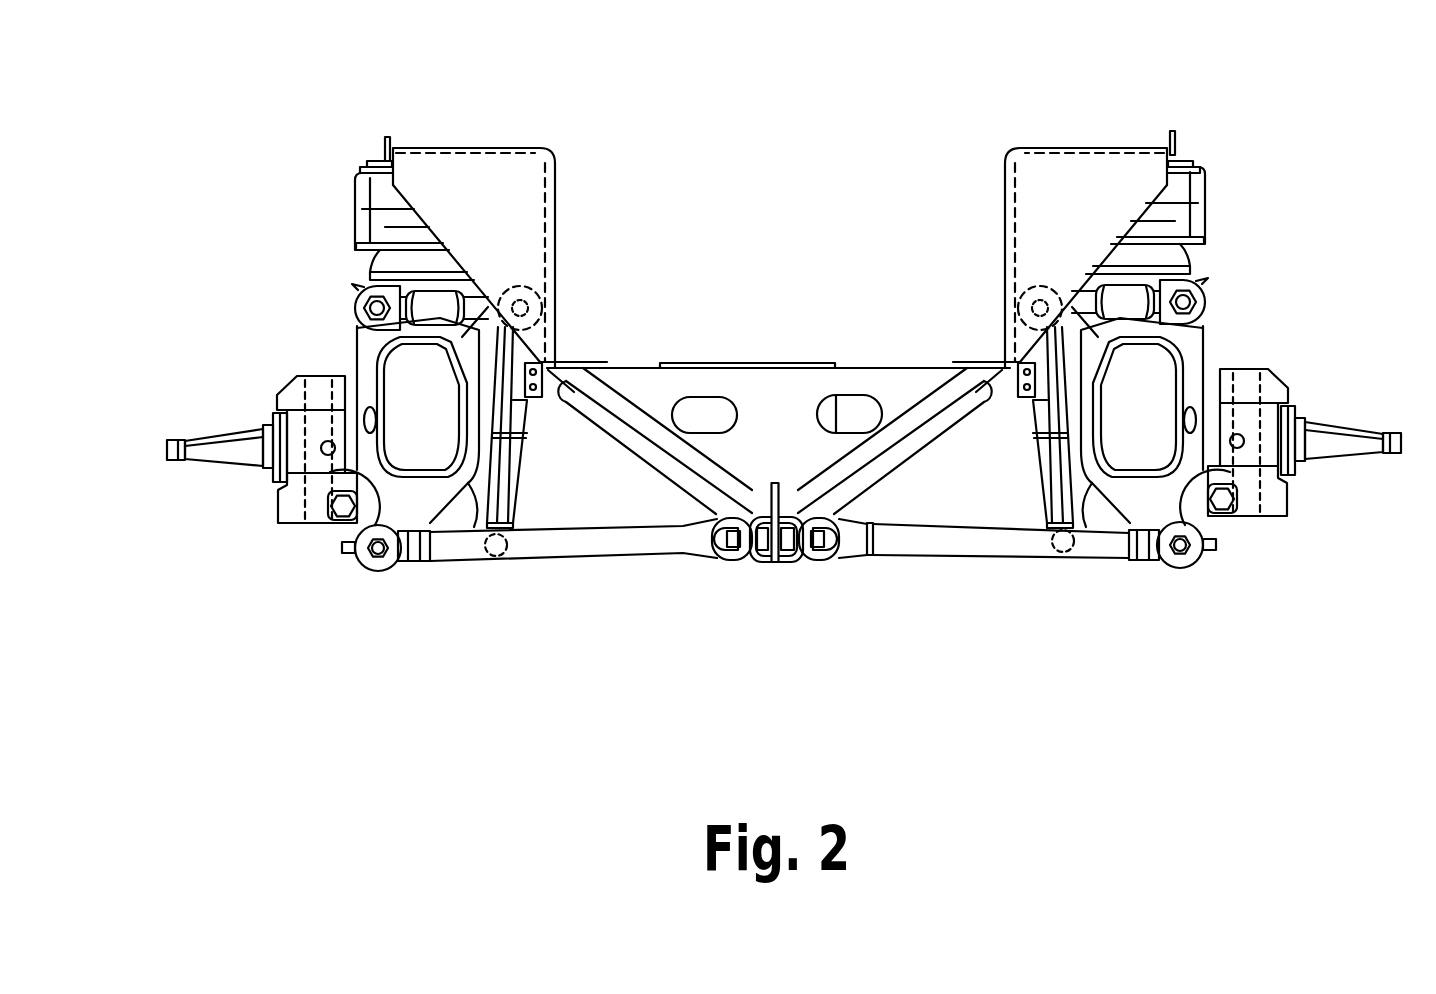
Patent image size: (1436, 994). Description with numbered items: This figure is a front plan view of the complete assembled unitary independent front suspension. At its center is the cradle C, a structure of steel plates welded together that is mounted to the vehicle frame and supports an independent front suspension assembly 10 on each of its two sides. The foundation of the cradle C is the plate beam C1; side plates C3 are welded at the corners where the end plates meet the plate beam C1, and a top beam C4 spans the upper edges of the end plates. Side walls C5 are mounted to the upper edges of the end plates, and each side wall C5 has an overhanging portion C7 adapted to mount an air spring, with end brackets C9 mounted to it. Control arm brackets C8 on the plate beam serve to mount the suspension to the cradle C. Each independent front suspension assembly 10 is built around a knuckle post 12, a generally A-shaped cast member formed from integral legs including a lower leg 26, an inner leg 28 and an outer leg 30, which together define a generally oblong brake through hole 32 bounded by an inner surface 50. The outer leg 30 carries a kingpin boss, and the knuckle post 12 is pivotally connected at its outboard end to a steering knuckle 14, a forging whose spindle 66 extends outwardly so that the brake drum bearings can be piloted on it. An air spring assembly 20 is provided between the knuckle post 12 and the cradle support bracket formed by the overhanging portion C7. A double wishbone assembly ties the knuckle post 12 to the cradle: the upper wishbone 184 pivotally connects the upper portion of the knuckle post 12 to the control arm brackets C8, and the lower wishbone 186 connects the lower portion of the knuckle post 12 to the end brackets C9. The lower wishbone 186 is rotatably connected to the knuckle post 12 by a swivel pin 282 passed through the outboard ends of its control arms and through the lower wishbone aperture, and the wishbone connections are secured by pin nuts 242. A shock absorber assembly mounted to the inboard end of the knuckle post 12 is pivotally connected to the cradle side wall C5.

The independent front suspension assembly 10 is at (300, 191).
The knuckle post 12 is at (432, 515).
The steering knuckle 14 is at (308, 515).
The air spring assembly 20 is at (360, 167).
The lower leg 26 is at (416, 513).
The inner leg 28 is at (478, 447).
The outer leg 30 is at (342, 344).
The brake through hole 32 is at (427, 445).
The inner surface 50 is at (382, 365).
The spindle 66 is at (218, 433).
The upper wishbone 184 is at (445, 302).
The lower wishbone 186 is at (608, 557).
The pin nuts 242 is at (367, 307).
The swivel pin 282 is at (363, 570).
The cradle C is at (775, 202).
The plate beam C1 is at (773, 562).
The side plates C3 is at (647, 430).
The top beam C4 is at (770, 363).
The side walls C5 is at (553, 220).
The overhanging portion C7 is at (515, 140).
The control arm brackets C8 is at (418, 205).
The end brackets C9 is at (750, 558).